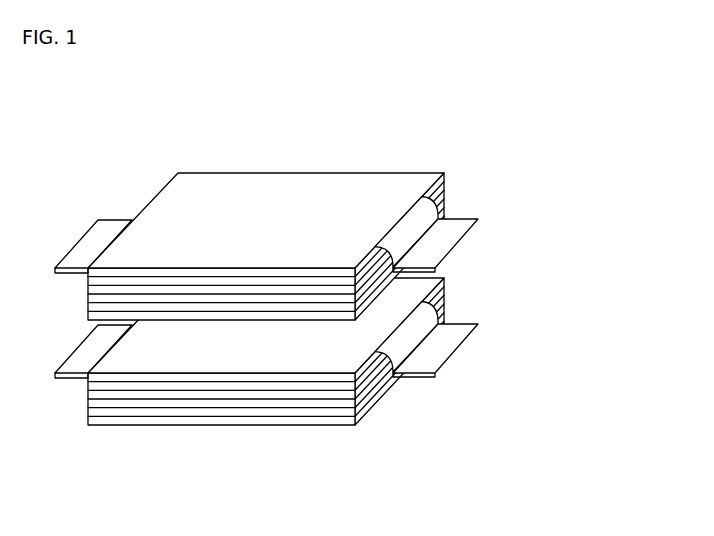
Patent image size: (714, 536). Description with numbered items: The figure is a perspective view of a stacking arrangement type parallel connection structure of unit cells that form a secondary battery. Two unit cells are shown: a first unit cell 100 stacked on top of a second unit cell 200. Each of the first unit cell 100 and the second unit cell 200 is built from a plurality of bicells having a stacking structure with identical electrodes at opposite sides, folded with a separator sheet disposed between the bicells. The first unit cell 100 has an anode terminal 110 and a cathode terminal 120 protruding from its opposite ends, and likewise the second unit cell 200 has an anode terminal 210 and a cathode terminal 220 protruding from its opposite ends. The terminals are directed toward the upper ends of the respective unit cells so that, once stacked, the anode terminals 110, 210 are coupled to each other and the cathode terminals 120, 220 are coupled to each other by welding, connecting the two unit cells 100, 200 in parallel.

The first unit cell 100 is at (283, 173).
The anode terminal 110 is at (105, 232).
The cathode terminal 120 is at (445, 237).
The second unit cell 200 is at (217, 424).
The anode terminal 210 is at (75, 365).
The cathode terminal 220 is at (445, 347).